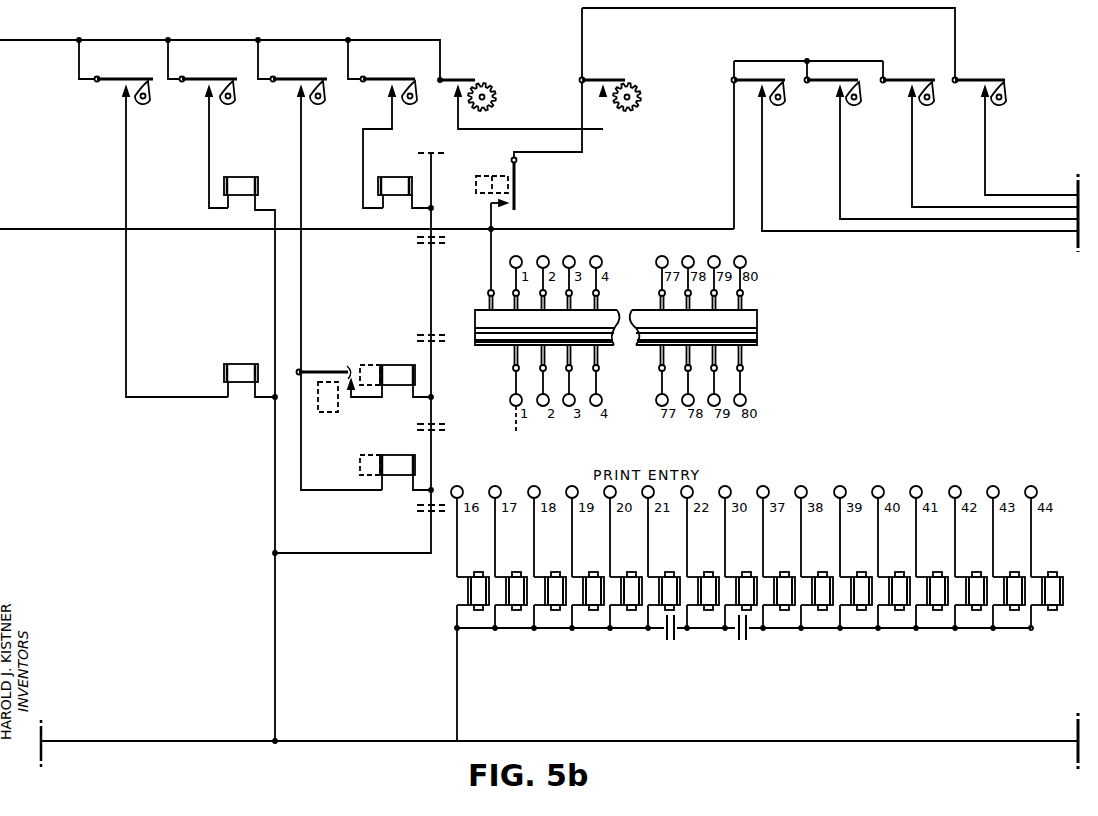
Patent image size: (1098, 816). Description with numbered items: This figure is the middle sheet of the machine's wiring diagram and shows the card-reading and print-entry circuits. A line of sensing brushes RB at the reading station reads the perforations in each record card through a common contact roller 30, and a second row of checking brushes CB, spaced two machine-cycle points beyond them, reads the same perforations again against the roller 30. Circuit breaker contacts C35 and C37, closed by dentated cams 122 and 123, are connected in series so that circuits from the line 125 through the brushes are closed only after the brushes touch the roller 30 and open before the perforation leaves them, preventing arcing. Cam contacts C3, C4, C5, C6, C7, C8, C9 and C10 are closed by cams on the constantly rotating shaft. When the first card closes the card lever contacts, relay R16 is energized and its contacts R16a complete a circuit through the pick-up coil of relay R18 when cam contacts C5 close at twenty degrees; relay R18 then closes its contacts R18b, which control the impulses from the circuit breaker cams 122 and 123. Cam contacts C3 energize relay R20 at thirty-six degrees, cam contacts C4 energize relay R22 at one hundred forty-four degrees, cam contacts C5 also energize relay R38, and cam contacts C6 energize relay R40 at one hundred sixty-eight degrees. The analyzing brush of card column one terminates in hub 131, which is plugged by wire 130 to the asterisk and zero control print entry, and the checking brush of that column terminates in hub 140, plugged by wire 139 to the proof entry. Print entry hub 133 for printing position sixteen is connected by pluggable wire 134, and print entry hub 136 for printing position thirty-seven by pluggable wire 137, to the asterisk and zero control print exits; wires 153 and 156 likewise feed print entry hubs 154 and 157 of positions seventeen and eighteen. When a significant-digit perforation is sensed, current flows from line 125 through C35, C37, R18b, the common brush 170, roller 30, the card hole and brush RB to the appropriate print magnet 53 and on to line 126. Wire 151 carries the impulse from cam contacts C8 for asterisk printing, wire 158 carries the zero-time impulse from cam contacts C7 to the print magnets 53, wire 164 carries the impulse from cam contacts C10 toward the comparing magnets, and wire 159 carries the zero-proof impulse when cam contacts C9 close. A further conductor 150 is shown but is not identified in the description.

The line 125 is at (310, 40).
The cam contacts C3 is at (147, 103).
The cam contacts C4 is at (232, 103).
The cam contacts C5 is at (322, 103).
The cam contacts C6 is at (414, 103).
The circuit breaker contacts C35 is at (521, 105).
The dentated cam 122 is at (471, 108).
The circuit breaker contacts C37 is at (734, 84).
The dentated cam 123 is at (616, 108).
The cam contacts C7 is at (782, 104).
The cam contacts C8 is at (858, 104).
The cam contacts C9 is at (931, 104).
The cam contacts C10 is at (1003, 104).
The wire 158 is at (871, 232).
The wire 151 is at (955, 220).
The wire 159 is at (1047, 208).
The wire 164 is at (1016, 176).
The bus 150 is at (58, 229).
The relay R22 is at (256, 158).
The relay R40 is at (408, 160).
The relay R18 is at (487, 176).
The relay contacts R18b is at (511, 206).
The relay R20 is at (256, 345).
The relay contacts R16a is at (324, 366).
The relay R16 is at (325, 413).
The relay R38 is at (400, 438).
The plug connection 139 is at (546, 234).
The hub 140 is at (510, 258).
The checking brushes CB is at (601, 282).
The common brush 170 is at (475, 304).
The sensing brushes RB is at (608, 375).
The hub 131 is at (510, 400).
The plug connection 130 is at (516, 430).
The contact roller 30 is at (615, 321).
The print entry hub 133 is at (462, 539).
The pluggable wire 134 is at (492, 462).
The wire 153 is at (497, 539).
The print entry hub 154 is at (492, 498).
The wire 156 is at (549, 538).
The print entry hub 157 is at (531, 498).
The pluggable wire 137 is at (787, 539).
The print entry hub 136 is at (769, 487).
The print magnets 53 is at (747, 538).
The line 126 is at (385, 741).